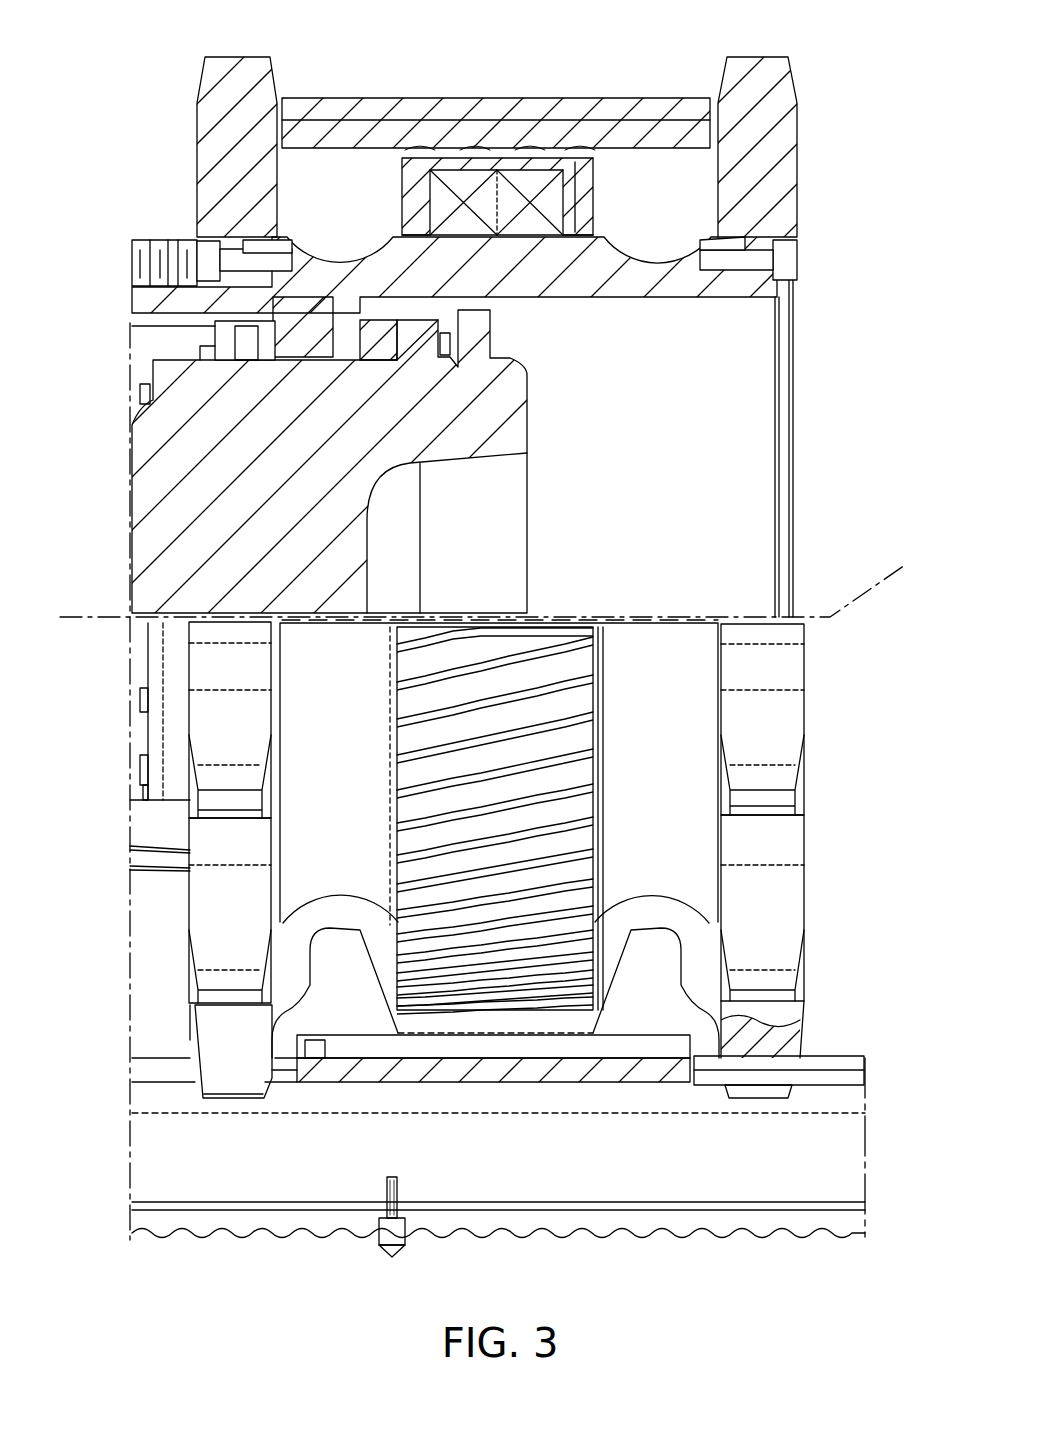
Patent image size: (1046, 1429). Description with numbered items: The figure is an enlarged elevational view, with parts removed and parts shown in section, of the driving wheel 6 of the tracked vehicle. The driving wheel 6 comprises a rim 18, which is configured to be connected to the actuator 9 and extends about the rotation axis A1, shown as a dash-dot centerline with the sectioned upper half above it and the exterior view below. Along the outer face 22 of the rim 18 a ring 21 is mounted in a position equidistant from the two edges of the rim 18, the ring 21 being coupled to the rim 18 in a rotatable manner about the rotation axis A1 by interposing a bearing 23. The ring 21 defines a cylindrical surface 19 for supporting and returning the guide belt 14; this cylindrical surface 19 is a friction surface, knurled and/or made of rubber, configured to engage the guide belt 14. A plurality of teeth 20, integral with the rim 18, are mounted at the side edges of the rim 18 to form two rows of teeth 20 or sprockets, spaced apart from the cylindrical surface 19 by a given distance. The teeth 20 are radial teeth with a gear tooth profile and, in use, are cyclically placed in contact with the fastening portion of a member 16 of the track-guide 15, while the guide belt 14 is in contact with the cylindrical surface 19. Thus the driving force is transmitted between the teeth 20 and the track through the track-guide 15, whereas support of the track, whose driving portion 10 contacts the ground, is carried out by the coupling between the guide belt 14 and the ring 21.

The driving wheel 6 is at (820, 388).
The actuator 9 is at (88, 452).
The driving portion 10 is at (590, 1195).
The guide belt 14 is at (370, 125).
The track-guide 15 is at (300, 1128).
The member 16 is at (348, 962).
The rim 18 is at (655, 287).
The cylindrical surface 19 is at (480, 165).
The teeth 20 is at (762, 115).
The ring 21 is at (587, 212).
The outer face 22 is at (543, 234).
The bearing 23 is at (527, 175).
The rotation axis A1 is at (501, 581).